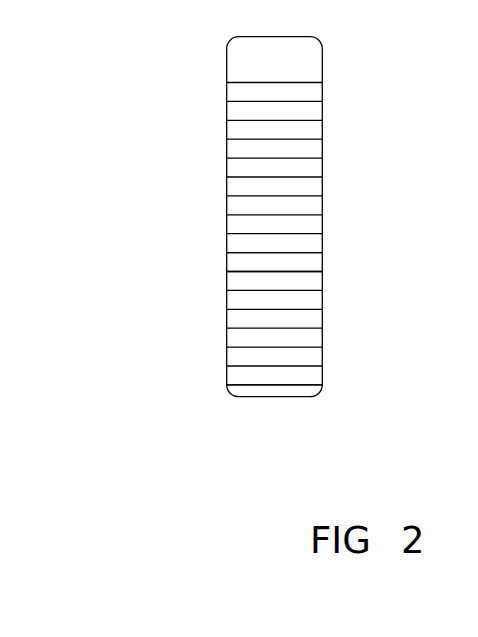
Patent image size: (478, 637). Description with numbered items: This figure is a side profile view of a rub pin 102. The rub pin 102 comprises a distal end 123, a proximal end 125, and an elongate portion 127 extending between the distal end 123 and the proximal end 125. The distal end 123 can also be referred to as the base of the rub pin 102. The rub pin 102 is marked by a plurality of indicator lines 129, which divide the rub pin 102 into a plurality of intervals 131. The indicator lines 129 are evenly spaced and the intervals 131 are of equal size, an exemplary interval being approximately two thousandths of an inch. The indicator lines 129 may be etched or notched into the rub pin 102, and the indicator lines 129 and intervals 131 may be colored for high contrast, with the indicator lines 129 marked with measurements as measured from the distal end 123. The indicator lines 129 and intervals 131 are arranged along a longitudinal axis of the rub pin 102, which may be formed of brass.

The rub pin 102 is at (96, 112).
The distal end 123 is at (322, 63).
The proximal end 125 is at (281, 397).
The elongate portion 127 is at (322, 177).
The indicator lines 129 is at (300, 272).
The intervals 131 is at (315, 260).